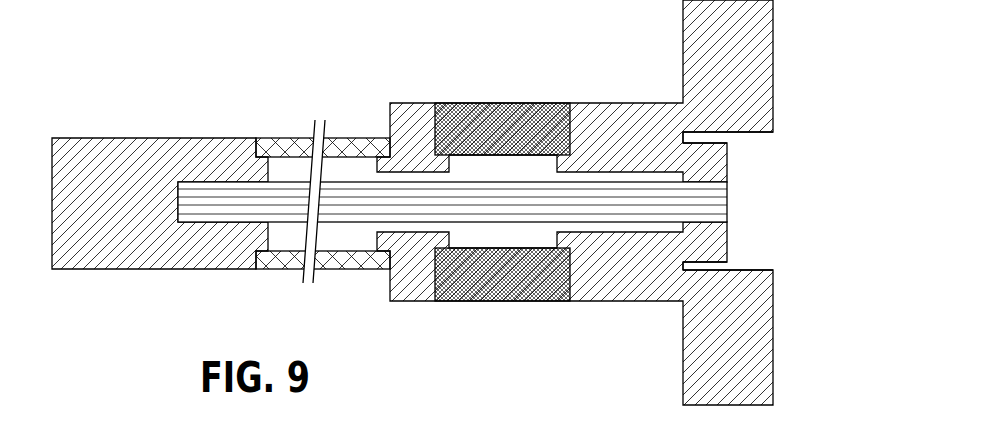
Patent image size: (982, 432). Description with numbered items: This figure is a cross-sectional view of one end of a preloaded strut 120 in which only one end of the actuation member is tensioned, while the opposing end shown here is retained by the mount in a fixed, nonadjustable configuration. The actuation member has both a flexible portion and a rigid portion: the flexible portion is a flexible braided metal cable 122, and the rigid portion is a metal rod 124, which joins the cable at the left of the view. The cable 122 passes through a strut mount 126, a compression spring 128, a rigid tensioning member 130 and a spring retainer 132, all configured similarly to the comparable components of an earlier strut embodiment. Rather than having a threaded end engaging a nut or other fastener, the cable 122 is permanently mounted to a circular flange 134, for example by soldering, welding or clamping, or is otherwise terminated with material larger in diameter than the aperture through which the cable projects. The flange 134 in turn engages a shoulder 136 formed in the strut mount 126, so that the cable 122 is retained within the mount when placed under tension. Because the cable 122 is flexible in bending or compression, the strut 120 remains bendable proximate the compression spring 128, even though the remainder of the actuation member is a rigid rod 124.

The strut 120 is at (452, 202).
The flexible braided metal cable 122 is at (347, 182).
The metal rod 124 is at (192, 270).
The strut mount 126 is at (648, 103).
The compression spring 128 is at (518, 301).
The rigid tensioning member 130 is at (290, 270).
The spring retainer 132 is at (420, 301).
The circular flange 134 is at (727, 148).
The shoulder 136 is at (684, 269).